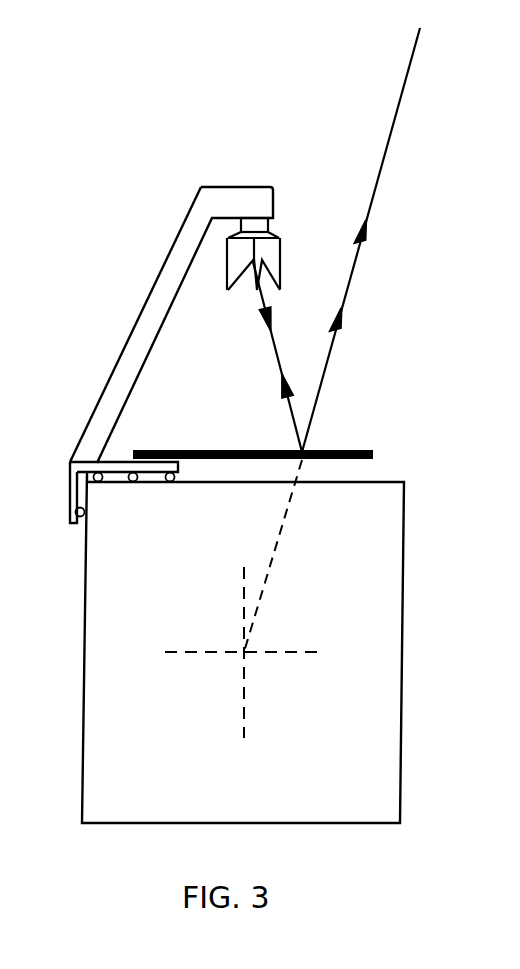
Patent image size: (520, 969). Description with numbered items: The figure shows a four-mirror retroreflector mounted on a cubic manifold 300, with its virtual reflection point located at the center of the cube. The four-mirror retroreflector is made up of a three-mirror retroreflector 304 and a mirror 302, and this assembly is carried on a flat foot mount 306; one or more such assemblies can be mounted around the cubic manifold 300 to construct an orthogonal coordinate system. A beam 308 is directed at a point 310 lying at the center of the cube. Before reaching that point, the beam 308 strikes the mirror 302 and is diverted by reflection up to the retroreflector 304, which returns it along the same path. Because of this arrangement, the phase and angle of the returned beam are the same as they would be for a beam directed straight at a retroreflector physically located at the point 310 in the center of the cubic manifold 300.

The cubic manifold 300 is at (404, 688).
The mirror 302 is at (352, 450).
The three-mirror retroreflector 304 is at (281, 247).
The flat foot mount 306 is at (238, 186).
The beam 308 is at (398, 113).
The point 310 is at (245, 650).